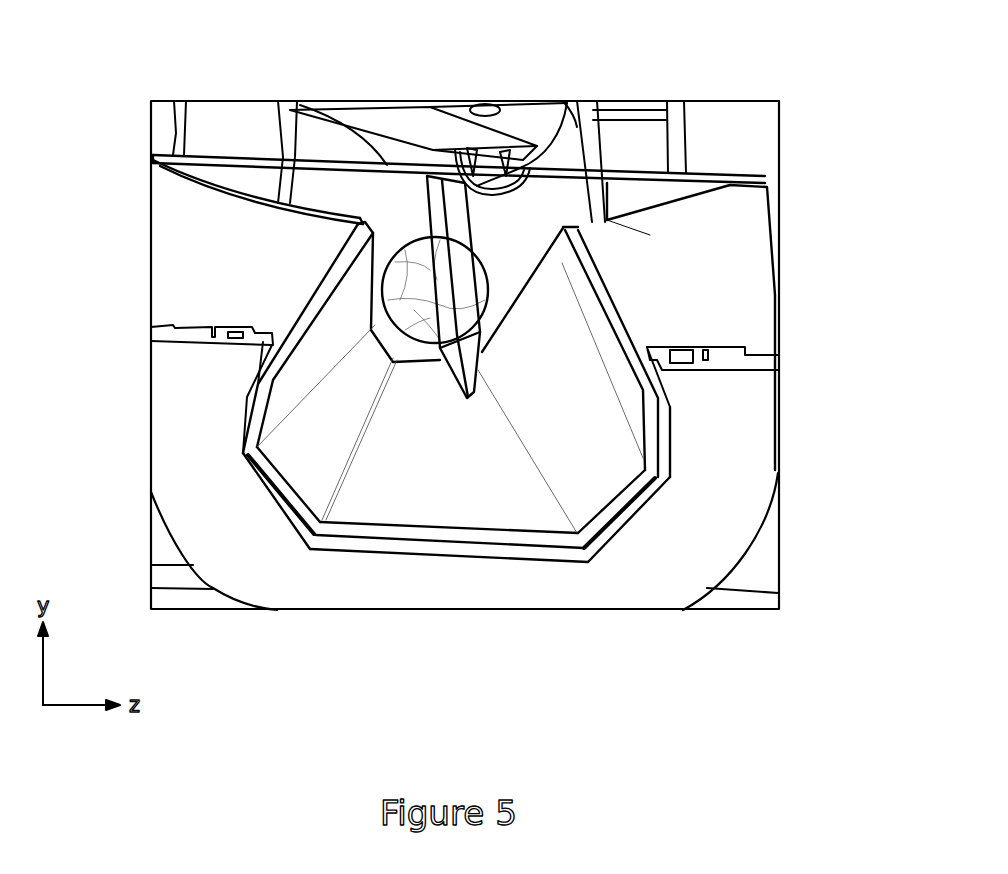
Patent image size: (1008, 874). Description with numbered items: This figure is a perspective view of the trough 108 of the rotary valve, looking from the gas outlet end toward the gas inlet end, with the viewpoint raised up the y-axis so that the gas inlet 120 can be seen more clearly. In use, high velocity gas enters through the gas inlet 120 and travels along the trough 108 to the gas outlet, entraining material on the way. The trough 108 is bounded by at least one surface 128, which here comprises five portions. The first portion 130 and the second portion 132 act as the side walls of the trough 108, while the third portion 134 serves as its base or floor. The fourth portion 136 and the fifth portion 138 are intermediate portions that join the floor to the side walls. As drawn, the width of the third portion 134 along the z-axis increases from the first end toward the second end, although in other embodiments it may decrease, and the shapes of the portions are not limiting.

The trough 108 is at (555, 333).
The gas inlet 120 is at (413, 240).
The at least one surface 128 is at (373, 503).
The first portion 130 is at (287, 407).
The second portion 132 is at (637, 423).
The third portion 134 is at (503, 508).
The fourth portion 136 is at (312, 467).
The fifth portion 138 is at (602, 490).